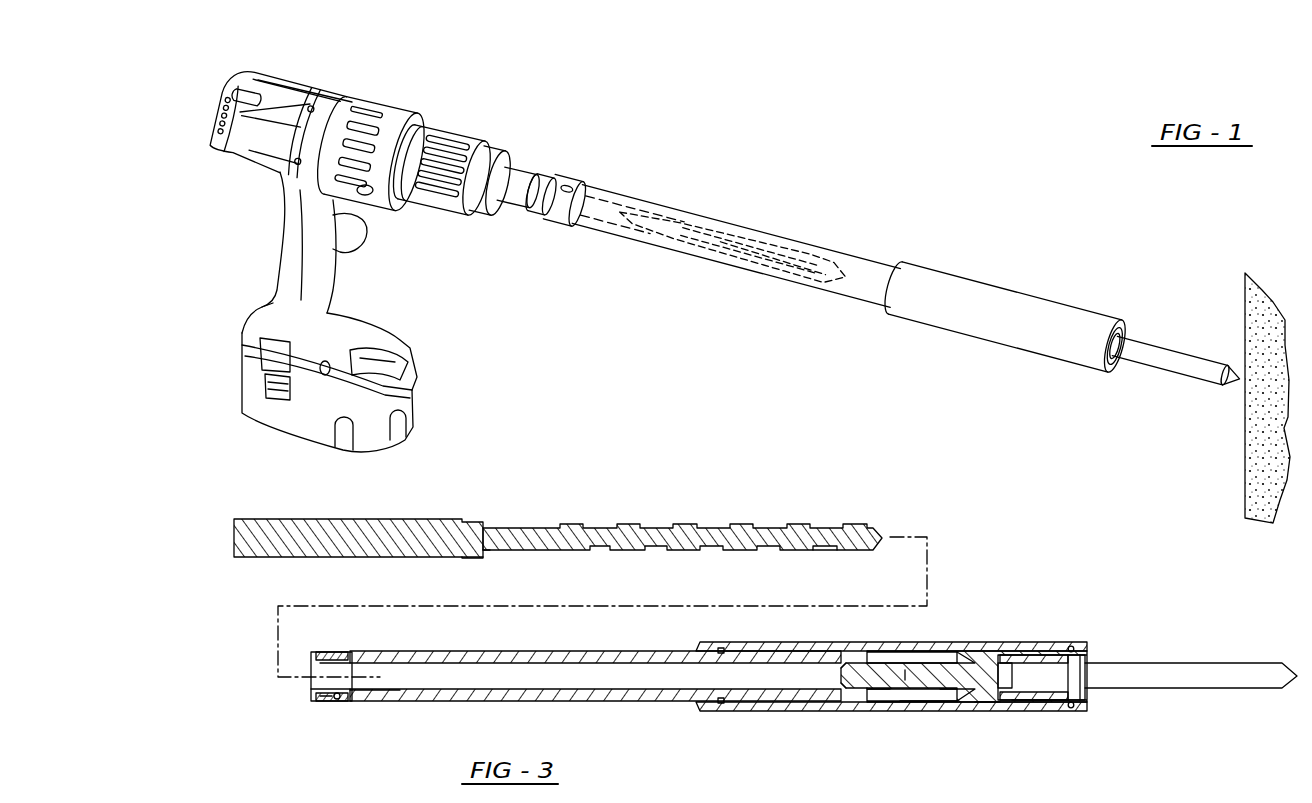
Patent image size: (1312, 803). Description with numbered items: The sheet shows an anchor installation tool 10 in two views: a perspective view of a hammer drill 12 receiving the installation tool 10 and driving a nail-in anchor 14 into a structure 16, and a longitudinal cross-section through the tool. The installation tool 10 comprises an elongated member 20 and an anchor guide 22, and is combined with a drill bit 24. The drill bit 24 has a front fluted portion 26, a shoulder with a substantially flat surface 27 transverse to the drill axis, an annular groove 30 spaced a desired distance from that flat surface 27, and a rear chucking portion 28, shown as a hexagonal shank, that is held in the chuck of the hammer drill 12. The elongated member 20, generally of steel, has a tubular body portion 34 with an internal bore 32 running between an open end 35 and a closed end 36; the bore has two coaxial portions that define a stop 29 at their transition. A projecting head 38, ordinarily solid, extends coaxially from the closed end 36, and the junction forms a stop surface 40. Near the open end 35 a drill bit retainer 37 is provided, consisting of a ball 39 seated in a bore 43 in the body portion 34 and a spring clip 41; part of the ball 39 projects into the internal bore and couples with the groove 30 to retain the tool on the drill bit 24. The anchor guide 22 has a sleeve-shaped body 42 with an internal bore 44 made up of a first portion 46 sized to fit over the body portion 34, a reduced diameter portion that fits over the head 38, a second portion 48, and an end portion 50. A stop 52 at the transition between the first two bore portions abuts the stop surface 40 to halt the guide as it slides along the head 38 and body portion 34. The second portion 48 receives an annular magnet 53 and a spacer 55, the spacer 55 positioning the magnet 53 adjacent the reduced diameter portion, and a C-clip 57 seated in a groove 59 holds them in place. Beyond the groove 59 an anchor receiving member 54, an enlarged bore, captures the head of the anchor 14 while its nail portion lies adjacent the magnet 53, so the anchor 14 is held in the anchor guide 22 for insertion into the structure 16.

In FIG. 1, the installation tool 10 is at (905, 196).
In FIG. 3, the installation tool 10 is at (773, 680).
In FIG. 1, the hammer drill 12 is at (468, 75).
In FIG. 1, the nail-in anchor 14 is at (1170, 380).
In FIG. 3, the nail-in anchor 14 is at (1170, 662).
In FIG. 1, the structure 16 is at (1262, 288).
In FIG. 3, the elongated member 20 is at (758, 636).
In FIG. 3, the anchor guide 22 is at (886, 640).
In FIG. 3, the drill bit 24 is at (558, 520).
In FIG. 3, the front fluted portion 26 is at (822, 553).
In FIG. 3, the flat surface 27 is at (484, 553).
In FIG. 3, the chucking portion 28 is at (452, 519).
In FIG. 3, the stop 29 is at (343, 660).
In FIG. 3, the groove 30 is at (466, 560).
In FIG. 3, the internal bore 32 is at (548, 654).
In FIG. 3, the body portion 34 is at (640, 703).
In FIG. 3, the open end 35 is at (312, 665).
In FIG. 3, the closed end 36 is at (842, 675).
In FIG. 3, the drill bit retainer 37 is at (332, 707).
In FIG. 3, the projecting head 38 is at (907, 673).
In FIG. 3, the ball 39 is at (327, 688).
In FIG. 3, the stop surface 40 is at (883, 695).
In FIG. 3, the spring clip 41 is at (338, 701).
In FIG. 3, the sleeve-shaped body 42 is at (960, 705).
In FIG. 3, the bore 43 is at (350, 684).
In FIG. 3, the internal bore 44 is at (913, 694).
In FIG. 3, the first portion 46 is at (920, 654).
In FIG. 3, the second portion 48 is at (1044, 655).
In FIG. 3, the end portion 50 is at (692, 644).
In FIG. 3, the stop 52 is at (925, 692).
In FIG. 3, the annular magnet 53 is at (1006, 690).
In FIG. 3, the anchor receiving member 54 is at (997, 710).
In FIG. 3, the spacer 55 is at (1046, 703).
In FIG. 3, the C-clip 57 is at (1071, 645).
In FIG. 3, the groove 59 is at (1072, 708).